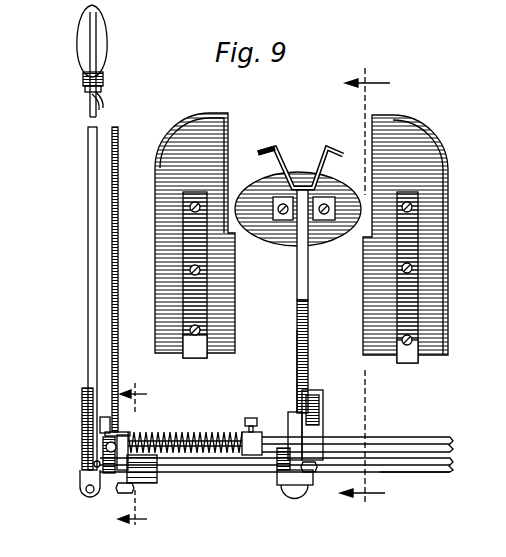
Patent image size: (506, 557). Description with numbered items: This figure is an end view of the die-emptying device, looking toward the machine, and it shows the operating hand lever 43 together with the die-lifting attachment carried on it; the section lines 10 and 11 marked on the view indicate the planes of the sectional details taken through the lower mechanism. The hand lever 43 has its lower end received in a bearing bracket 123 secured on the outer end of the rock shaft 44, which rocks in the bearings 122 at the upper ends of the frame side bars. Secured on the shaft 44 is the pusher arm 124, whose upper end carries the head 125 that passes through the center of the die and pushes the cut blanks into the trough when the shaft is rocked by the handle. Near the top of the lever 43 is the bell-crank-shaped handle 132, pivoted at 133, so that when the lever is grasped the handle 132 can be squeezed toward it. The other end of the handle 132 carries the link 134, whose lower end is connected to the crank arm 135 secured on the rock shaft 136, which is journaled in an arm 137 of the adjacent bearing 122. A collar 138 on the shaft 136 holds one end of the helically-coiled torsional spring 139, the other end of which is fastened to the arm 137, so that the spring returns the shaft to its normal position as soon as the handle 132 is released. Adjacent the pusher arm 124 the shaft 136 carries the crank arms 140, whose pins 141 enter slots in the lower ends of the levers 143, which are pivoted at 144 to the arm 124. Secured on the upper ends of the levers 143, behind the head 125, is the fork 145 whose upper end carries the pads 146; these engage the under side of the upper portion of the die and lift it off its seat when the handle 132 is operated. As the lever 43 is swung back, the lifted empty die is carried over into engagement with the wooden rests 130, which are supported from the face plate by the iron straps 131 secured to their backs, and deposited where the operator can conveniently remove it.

The section line 10- 10 is at (365, 282).
The section line 11- 11 is at (135, 456).
The operating handle 43 is at (89, 285).
The rock shaft 44 is at (420, 473).
The bearings 122 is at (150, 481).
The bearing bracket 123 is at (83, 477).
The pusher arm 124 is at (297, 348).
The head 125 is at (285, 243).
The wooden rests 130 is at (301, 234).
The iron straps 131 is at (203, 295).
The bell-crank-shaped handle 132 is at (93, 33).
The pivot 133 is at (100, 80).
The link 134 is at (115, 236).
The crank arm 135 is at (108, 430).
The rock shaft 136 is at (420, 444).
The arm 137 is at (115, 456).
The collar 138 is at (250, 418).
The helically-coiled torsional spring 139 is at (185, 427).
The crank arms 140 is at (324, 433).
The pins 141 is at (320, 402).
The levers 143 is at (308, 282).
The pivot 144 is at (310, 346).
The fork 145 is at (300, 176).
The pads 146 is at (334, 150).